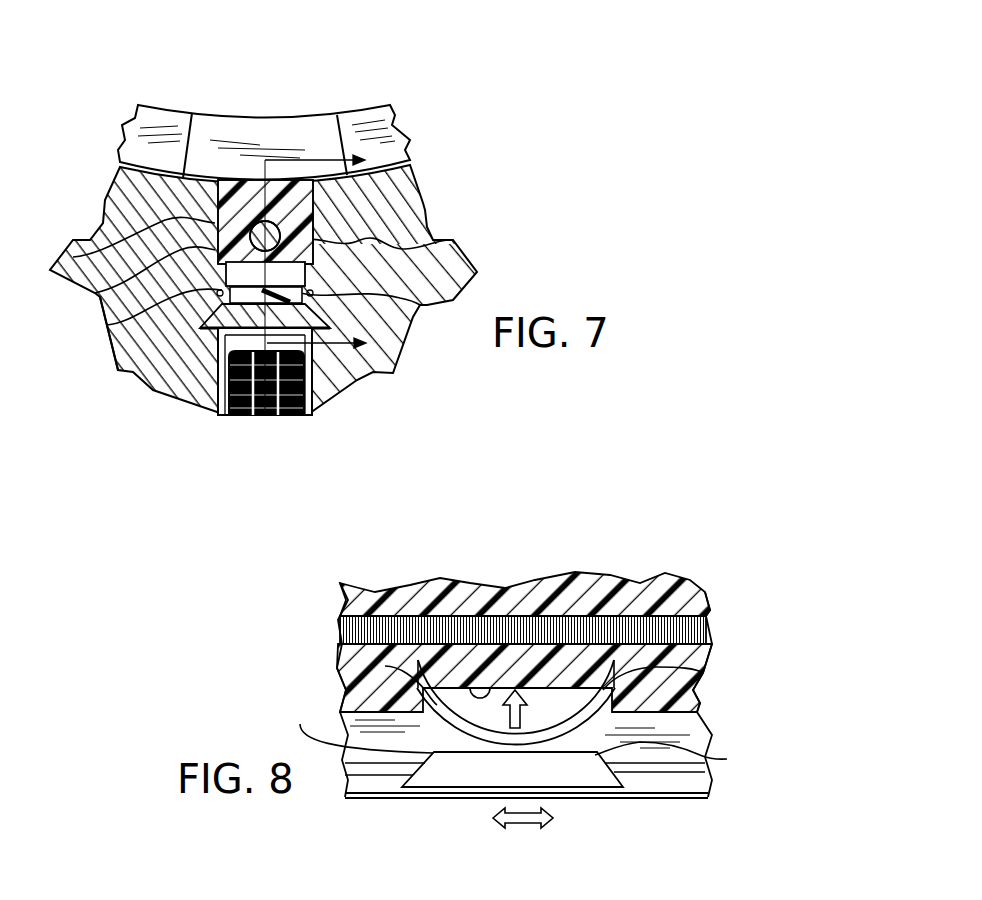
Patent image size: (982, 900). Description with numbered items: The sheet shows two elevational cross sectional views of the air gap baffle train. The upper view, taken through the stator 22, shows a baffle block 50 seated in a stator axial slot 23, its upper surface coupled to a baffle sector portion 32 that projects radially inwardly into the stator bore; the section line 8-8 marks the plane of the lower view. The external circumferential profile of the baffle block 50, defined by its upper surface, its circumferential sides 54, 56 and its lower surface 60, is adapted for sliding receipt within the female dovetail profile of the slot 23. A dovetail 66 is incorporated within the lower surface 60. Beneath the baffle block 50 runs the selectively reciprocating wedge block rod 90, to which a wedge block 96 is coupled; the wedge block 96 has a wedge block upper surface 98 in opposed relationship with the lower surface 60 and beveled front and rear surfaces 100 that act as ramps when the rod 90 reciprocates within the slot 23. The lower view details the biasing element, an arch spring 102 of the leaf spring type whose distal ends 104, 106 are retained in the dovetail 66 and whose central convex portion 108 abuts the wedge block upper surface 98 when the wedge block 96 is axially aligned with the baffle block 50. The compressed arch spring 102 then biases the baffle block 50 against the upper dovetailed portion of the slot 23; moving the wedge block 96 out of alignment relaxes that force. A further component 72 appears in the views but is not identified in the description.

In FIG. 7, the section line 8- 8 is at (325, 280).
In FIG. 7, the stator 22 is at (350, 373).
In FIG. 7, the stator axial slot 23 is at (107, 325).
In FIG. 8, the stator axial slot 23 is at (595, 722).
In FIG. 7, the baffle sector portion 32 is at (168, 125).
In FIG. 7, the baffle block 50 is at (317, 224).
In FIG. 8, the baffle block 50 is at (607, 642).
In FIG. 7, the circumferential side 54 is at (95, 293).
In FIG. 7, the circumferential side 56 is at (433, 240).
In FIG. 7, the lower surface 60 is at (427, 303).
In FIG. 8, the dovetail 66 is at (517, 615).
In FIG. 7, the threaded portion 72 is at (73, 257).
In FIG. 8, the threaded portion 72 is at (705, 621).
In FIG. 7, the wedge block rod 90 is at (300, 397).
In FIG. 8, the wedge block rod 90 is at (380, 768).
In FIG. 7, the wedge block 96 is at (237, 416).
In FIG. 8, the wedge block 96 is at (443, 768).
In FIG. 8, the wedge block upper surface 98 is at (703, 707).
In FIG. 8, the beveled front and rear surfaces 100 is at (524, 733).
In FIG. 7, the arch spring 102 is at (248, 283).
In FIG. 8, the arch spring 102 is at (430, 703).
In FIG. 8, the arch spring distal end 104 is at (385, 666).
In FIG. 8, the arch spring distal end 106 is at (645, 667).
In FIG. 8, the central convex portion 108 is at (512, 740).